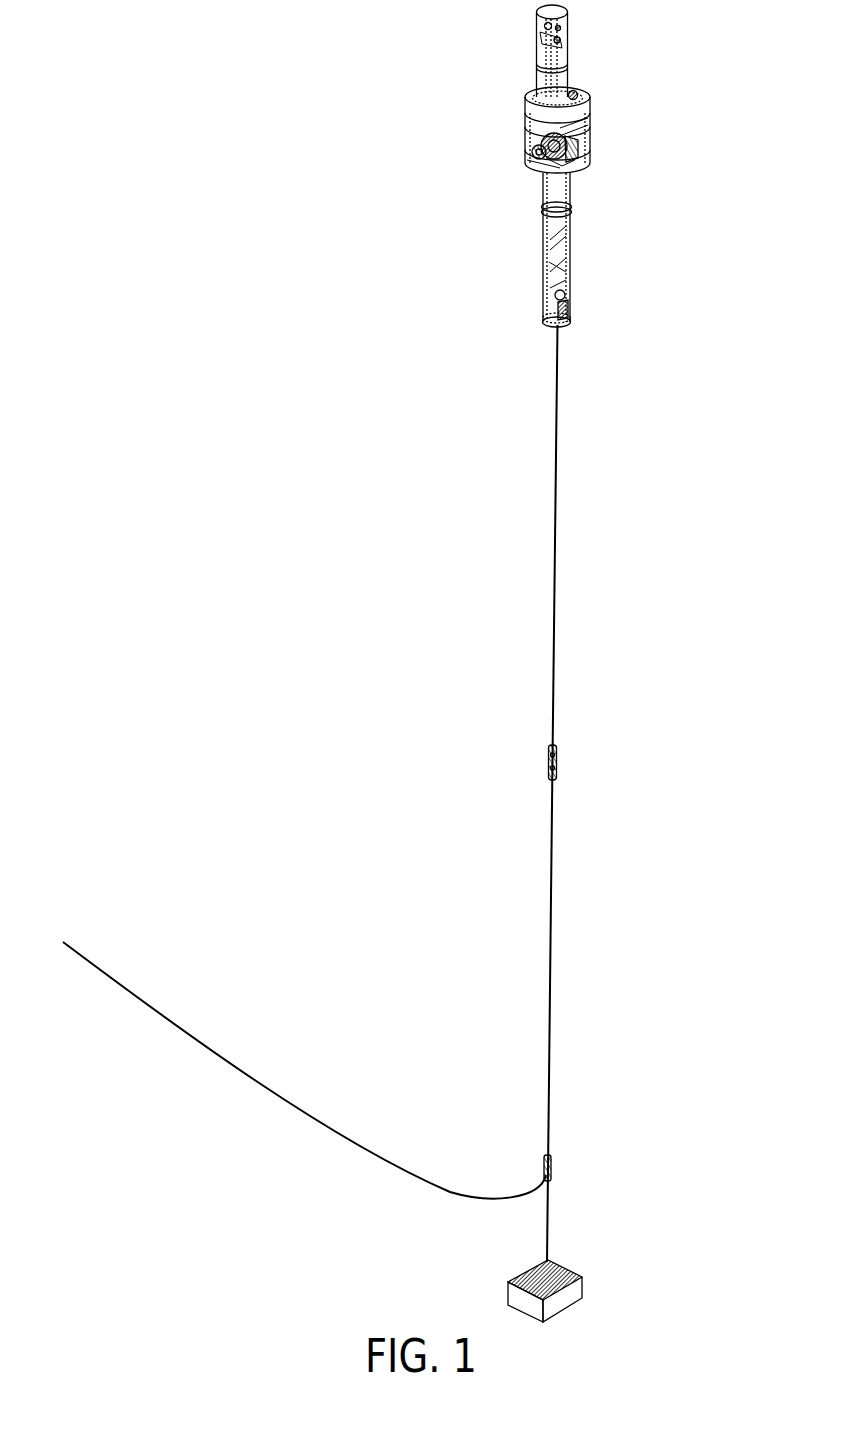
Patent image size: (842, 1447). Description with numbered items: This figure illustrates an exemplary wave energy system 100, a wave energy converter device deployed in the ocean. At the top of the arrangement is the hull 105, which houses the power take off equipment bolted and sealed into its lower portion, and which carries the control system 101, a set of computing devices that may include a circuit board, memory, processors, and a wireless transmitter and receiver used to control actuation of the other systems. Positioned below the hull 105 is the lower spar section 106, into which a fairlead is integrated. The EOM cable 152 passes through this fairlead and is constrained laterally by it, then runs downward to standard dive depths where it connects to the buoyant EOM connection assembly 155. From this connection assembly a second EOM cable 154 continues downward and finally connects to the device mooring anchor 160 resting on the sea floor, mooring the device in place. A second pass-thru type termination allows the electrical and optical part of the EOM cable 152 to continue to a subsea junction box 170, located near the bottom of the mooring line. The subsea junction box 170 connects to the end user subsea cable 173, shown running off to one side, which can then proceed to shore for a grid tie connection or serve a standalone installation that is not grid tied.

The wave energy system 100 is at (313, 145).
The control system 101 is at (585, 147).
The hull 105 is at (522, 127).
The lower spar section 106 is at (522, 238).
The EOM cable 152 is at (573, 675).
The second EOM cable 154 is at (573, 930).
The buoyant EOM connection assembly 155 is at (545, 740).
The device mooring anchor 160 is at (595, 1245).
The subsea junction box 170 is at (557, 1152).
The end user subsea cable 173 is at (253, 1037).